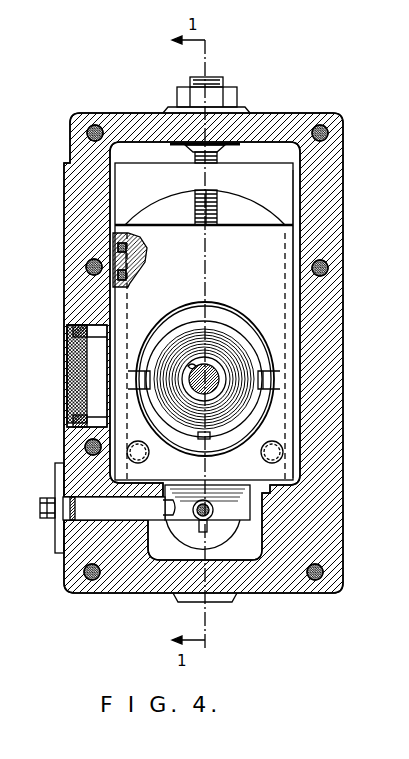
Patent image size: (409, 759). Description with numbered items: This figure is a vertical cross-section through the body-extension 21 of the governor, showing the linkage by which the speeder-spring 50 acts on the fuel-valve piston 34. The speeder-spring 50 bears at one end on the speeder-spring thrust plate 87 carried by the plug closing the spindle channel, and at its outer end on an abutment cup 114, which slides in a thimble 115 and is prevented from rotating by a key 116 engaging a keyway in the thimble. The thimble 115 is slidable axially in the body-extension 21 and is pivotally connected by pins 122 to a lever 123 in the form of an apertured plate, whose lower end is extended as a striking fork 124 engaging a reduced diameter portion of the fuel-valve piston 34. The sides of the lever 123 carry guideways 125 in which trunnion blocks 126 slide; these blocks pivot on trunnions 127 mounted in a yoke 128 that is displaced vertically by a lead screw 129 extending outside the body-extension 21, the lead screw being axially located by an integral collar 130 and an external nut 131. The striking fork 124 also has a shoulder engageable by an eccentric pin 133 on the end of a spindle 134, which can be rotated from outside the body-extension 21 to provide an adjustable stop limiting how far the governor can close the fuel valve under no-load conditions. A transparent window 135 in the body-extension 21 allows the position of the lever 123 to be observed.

The body-extension 21 is at (342, 237).
The fuel-valve piston 34 is at (215, 503).
The speeder-spring 50 is at (246, 383).
The speeder-spring thrust plate 87 is at (197, 365).
The abutment cup 114 is at (244, 416).
The thimble 115 is at (242, 429).
The key 116 is at (210, 439).
The pins 122 is at (131, 352).
The lever 123 is at (275, 311).
The striking fork 124 is at (195, 518).
The guideways 125 is at (112, 283).
The trunnion blocks 126 is at (140, 270).
The trunnions 127 is at (118, 258).
The yoke 128 is at (278, 186).
The lead screw 129 is at (217, 161).
The collar 130 is at (236, 143).
The external nut 131 is at (216, 92).
The eccentric pin 133 is at (140, 547).
The spindle 134 is at (65, 557).
The transparent window 135 is at (68, 368).